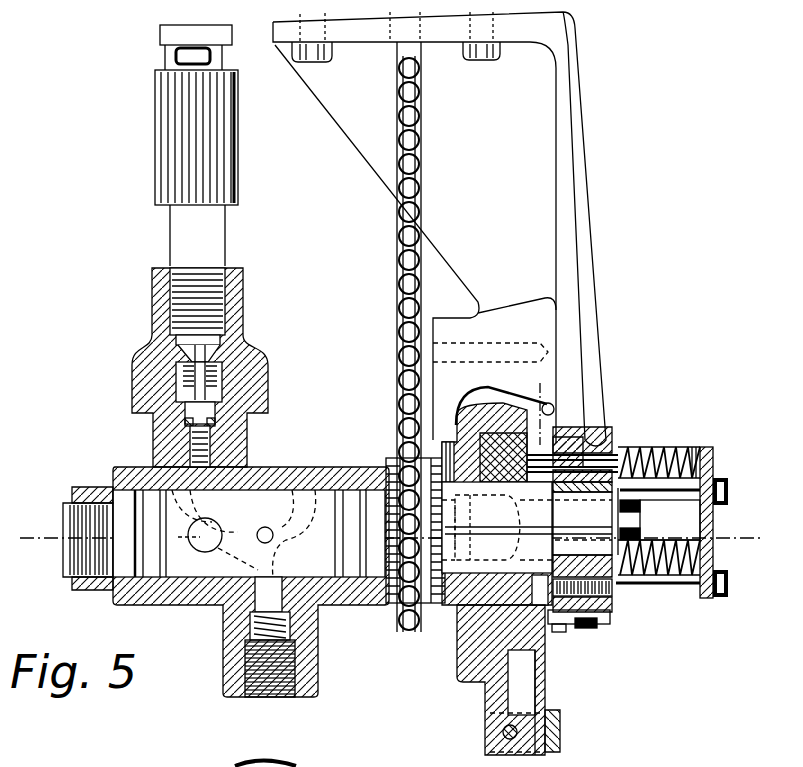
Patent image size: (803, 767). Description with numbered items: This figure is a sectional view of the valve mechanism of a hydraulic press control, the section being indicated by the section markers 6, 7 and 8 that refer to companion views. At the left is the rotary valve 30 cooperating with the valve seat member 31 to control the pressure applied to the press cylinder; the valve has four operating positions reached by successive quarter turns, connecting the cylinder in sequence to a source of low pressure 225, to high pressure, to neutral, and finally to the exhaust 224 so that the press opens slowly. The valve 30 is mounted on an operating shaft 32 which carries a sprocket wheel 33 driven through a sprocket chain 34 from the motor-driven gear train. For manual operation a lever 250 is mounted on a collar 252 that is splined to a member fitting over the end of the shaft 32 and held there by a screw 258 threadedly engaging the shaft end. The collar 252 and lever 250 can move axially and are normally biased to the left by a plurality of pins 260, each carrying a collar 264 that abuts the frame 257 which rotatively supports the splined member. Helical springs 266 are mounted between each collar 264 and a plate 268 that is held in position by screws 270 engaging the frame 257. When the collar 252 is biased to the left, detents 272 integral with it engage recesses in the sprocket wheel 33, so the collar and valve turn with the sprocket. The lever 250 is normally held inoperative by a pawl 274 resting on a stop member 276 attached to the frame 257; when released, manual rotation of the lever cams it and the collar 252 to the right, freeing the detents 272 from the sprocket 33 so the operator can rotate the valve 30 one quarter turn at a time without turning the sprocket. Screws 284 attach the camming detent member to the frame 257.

The source of low pressure 225 is at (172, 217).
The rotary valve 30 is at (153, 466).
The valve seat member 31 is at (290, 466).
The exhaust 224 is at (222, 660).
The sprocket chain 34 is at (404, 297).
The sprocket wheel 33 is at (405, 606).
The operating shaft 32 is at (447, 638).
The screws 284 is at (406, 350).
The detents 272 is at (456, 421).
The frame 257 is at (578, 326).
The pins 260 is at (616, 447).
The collar 264 is at (630, 450).
The helical springs 266 is at (668, 450).
The plate 268 is at (713, 452).
The screw 258 is at (640, 521).
The screws 270 is at (714, 575).
The member 276 is at (614, 617).
The collar 252 is at (510, 592).
The pawl 274 is at (554, 651).
The lever 250 is at (482, 678).
The section line 6- 6 is at (29, 528).
The section line 7- 7 is at (445, 400).
The section line 8- 8 is at (553, 625).